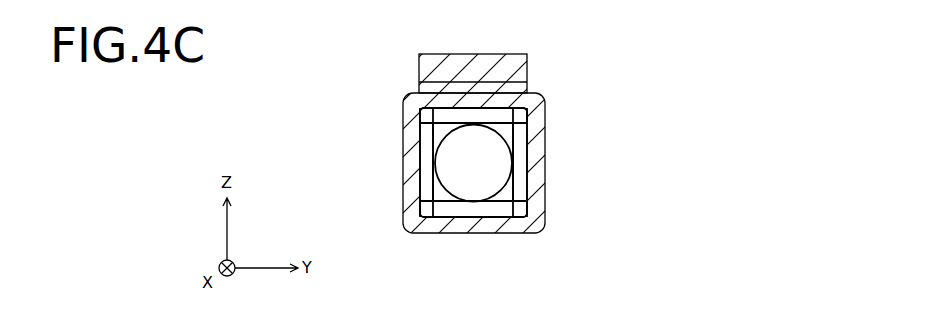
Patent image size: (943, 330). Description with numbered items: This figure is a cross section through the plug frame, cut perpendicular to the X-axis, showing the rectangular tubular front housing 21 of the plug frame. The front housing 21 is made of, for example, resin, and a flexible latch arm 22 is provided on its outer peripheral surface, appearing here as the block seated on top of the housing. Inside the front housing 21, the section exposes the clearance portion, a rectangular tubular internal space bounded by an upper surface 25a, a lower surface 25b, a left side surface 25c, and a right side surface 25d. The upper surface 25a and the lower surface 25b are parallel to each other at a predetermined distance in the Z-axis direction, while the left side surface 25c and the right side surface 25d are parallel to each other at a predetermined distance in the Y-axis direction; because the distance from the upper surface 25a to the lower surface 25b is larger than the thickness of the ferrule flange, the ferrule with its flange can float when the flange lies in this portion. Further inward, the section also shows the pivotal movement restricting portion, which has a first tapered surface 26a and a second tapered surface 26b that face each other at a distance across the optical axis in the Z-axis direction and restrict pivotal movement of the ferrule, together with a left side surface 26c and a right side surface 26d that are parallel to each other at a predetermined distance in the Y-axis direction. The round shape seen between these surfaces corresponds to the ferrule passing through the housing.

The front housing 21 is at (544, 209).
The latch arm 22 is at (508, 54).
The upper surface 25a is at (461, 111).
The lower surface 25b is at (457, 212).
The left side surface 25c is at (426, 153).
The right side surface 25d is at (524, 155).
The first tapered surface 26a is at (481, 123).
The second tapered surface 26b is at (498, 205).
The left side surface 26c is at (437, 188).
The right side surface 26d is at (514, 185).